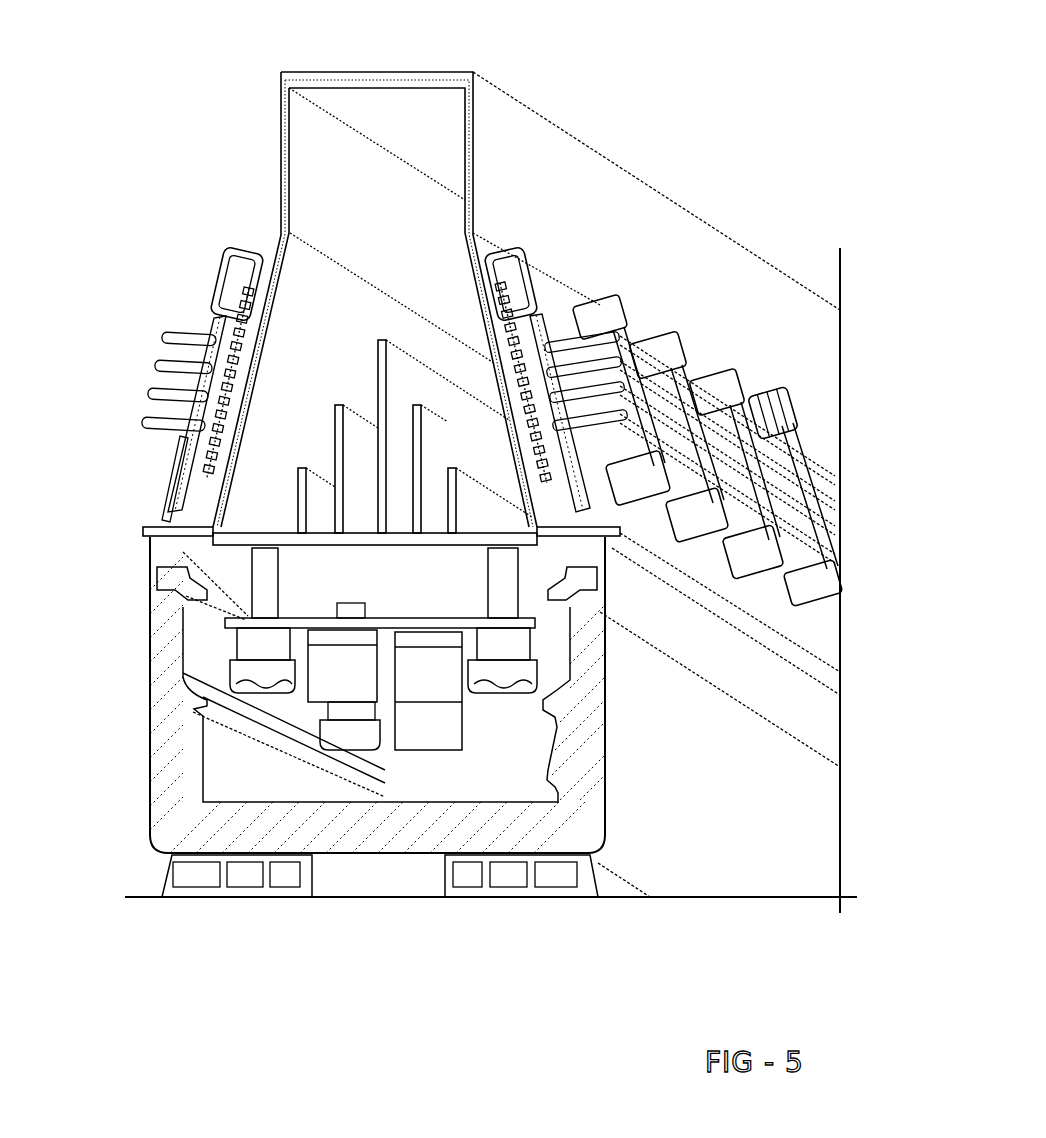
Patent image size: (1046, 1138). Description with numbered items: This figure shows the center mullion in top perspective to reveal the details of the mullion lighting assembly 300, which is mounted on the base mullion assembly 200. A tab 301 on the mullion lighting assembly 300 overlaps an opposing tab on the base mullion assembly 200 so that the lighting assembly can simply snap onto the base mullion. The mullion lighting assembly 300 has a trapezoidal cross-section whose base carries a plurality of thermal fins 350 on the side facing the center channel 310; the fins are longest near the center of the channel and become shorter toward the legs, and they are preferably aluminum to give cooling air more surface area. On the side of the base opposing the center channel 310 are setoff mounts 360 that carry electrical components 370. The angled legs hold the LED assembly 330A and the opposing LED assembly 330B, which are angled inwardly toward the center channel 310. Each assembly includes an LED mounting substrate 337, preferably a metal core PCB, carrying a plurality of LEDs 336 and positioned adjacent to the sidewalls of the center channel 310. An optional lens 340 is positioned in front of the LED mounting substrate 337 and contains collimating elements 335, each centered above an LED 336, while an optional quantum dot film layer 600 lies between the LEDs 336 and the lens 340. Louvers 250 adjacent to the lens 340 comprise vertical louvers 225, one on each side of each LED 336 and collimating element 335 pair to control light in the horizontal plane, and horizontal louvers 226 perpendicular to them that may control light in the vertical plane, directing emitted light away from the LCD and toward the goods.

The mullion lighting assembly 300 is at (256, 72).
The center channel 310 is at (352, 178).
The tab 301 is at (152, 560).
The lens 340 is at (258, 250).
The LED assembly 330A is at (490, 258).
The opposing LED assembly 330B is at (258, 262).
The quantum dot film layer 600 is at (222, 330).
The collimating element 335 is at (180, 328).
The LED 336 is at (195, 384).
The LED mounting substrate 337 is at (175, 469).
The thermal fins 350 is at (376, 386).
The setoff mounts 360 is at (270, 592).
The electrical components 370 is at (200, 706).
The base mullion assembly 200 is at (175, 800).
The horizontal louvers 226 is at (618, 303).
The vertical louvers 225 is at (695, 437).
The louvers 250 is at (828, 488).